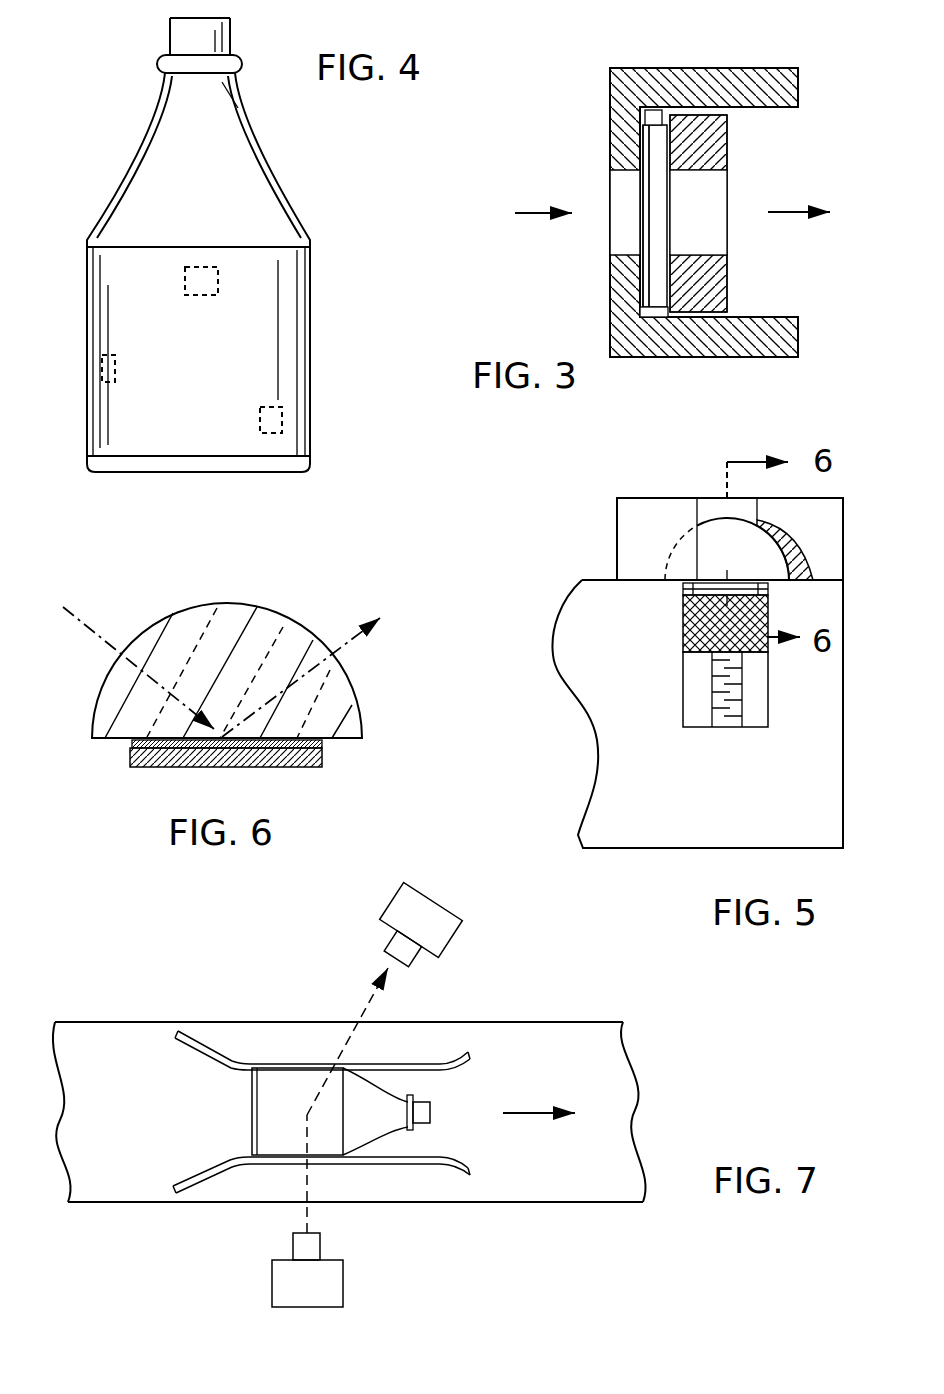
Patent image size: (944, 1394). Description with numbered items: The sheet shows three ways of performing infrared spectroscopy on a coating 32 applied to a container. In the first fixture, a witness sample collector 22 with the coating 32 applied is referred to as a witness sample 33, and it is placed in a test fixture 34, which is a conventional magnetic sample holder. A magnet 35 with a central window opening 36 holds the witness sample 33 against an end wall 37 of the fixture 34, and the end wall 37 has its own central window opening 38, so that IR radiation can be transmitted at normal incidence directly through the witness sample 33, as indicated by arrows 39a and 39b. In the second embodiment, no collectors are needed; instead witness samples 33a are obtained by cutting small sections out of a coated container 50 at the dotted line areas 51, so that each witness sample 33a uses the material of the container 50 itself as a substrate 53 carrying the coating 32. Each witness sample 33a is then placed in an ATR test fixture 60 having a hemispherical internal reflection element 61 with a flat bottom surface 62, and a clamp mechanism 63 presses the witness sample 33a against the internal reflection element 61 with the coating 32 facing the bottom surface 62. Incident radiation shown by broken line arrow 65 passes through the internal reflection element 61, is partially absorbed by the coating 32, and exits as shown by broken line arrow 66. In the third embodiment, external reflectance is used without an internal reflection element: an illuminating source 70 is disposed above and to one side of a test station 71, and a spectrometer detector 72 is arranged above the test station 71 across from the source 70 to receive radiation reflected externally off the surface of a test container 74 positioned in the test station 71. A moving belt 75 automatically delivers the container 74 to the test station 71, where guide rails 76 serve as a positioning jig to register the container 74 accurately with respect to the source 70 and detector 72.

In FIG. 3, the witness sample collector 22 is at (659, 113).
In FIG. 3, the coating 32 is at (645, 122).
In FIG. 5, the coating 32 is at (687, 587).
In FIG. 6, the coating 32 is at (130, 742).
In FIG. 3, the witness sample 33 is at (636, 192).
In FIG. 4, the witness sample 33a is at (196, 283).
In FIG. 5, the witness sample 33a is at (769, 592).
In FIG. 6, the witness sample 33a is at (310, 771).
In FIG. 3, the test fixture 34 is at (594, 115).
In FIG. 3, the magnet 35 is at (734, 140).
In FIG. 3, the central window opening 36 is at (712, 195).
In FIG. 3, the end wall 37 is at (607, 265).
In FIG. 3, the central window opening 38 is at (623, 217).
In FIG. 3, the arrow 39a is at (532, 208).
In FIG. 3, the arrow 39b is at (780, 212).
In FIG. 4, the coated container 50 is at (272, 171).
In FIG. 4, the dotted line areas 51 is at (185, 272).
In FIG. 5, the substrate 53 is at (685, 597).
In FIG. 6, the substrate 53 is at (130, 757).
In FIG. 5, the ATR test fixture 60 is at (578, 536).
In FIG. 5, the hemispherical internal reflection element 61 is at (718, 530).
In FIG. 6, the hemispherical internal reflection element 61 is at (202, 617).
In FIG. 5, the flat bottom surface 62 is at (773, 592).
In FIG. 6, the flat bottom surface 62 is at (335, 743).
In FIG. 5, the clamp mechanism 63 is at (755, 654).
In FIG. 6, the incident radiation 65 is at (72, 613).
In FIG. 6, the exiting radiation 66 is at (352, 638).
In FIG. 7, the illuminating source 70 is at (283, 1278).
In FIG. 7, the test station 71 is at (417, 1180).
In FIG. 7, the spectrometer detector 72 is at (442, 935).
In FIG. 7, the test container 74 is at (370, 1097).
In FIG. 7, the moving belt 75 is at (572, 1188).
In FIG. 7, the guide rails 76 is at (213, 1048).